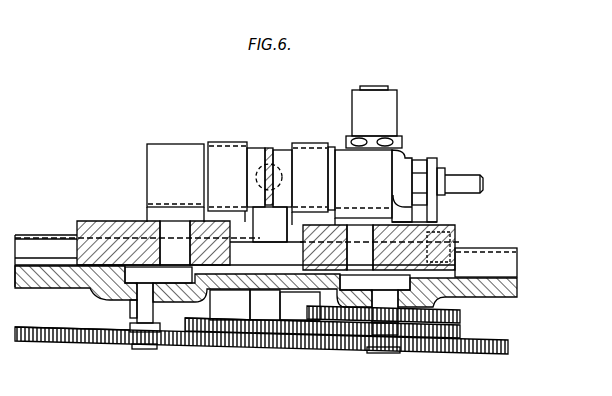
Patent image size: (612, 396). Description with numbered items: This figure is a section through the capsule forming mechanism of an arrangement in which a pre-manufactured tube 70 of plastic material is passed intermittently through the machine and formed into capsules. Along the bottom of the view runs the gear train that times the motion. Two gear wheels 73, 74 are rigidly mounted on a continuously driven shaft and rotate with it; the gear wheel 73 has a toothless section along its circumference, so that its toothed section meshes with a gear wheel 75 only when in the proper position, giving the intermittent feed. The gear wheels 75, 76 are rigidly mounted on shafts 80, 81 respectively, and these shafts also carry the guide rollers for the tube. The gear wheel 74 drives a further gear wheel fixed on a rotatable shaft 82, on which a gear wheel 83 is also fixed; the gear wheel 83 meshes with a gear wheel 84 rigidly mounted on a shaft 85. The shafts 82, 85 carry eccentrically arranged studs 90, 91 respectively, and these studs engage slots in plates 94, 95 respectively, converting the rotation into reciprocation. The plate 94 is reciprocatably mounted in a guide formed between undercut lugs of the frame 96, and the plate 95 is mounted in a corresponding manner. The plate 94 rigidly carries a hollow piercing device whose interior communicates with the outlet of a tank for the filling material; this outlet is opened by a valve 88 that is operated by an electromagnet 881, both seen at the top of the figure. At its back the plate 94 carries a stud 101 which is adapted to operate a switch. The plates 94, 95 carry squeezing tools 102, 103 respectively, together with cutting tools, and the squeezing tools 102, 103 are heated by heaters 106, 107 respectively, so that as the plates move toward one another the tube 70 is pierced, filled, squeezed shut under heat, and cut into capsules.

The pre-manufactured tube 70 is at (264, 148).
The gear wheel 73 is at (462, 324).
The gear wheel 74 is at (462, 314).
The gear wheel 75 is at (305, 325).
The gear wheel 76 is at (200, 330).
The shaft 80 is at (287, 305).
The shaft 81 is at (235, 305).
The rotatable shaft 82 is at (390, 323).
The gear wheel 83 is at (508, 346).
The gear wheel 84 is at (62, 341).
The shaft 85 is at (148, 330).
The valve 88 is at (380, 172).
The electromagnet 881 is at (387, 112).
The stud 90 is at (413, 223).
The stud 91 is at (170, 250).
The plate 94 is at (457, 233).
The plate 95 is at (93, 221).
The frame 96 is at (517, 283).
The stud 101 is at (517, 255).
The squeezing tool 102 is at (282, 152).
The squeezing tool 103 is at (249, 150).
The heater 106 is at (310, 162).
The heater 107 is at (223, 159).